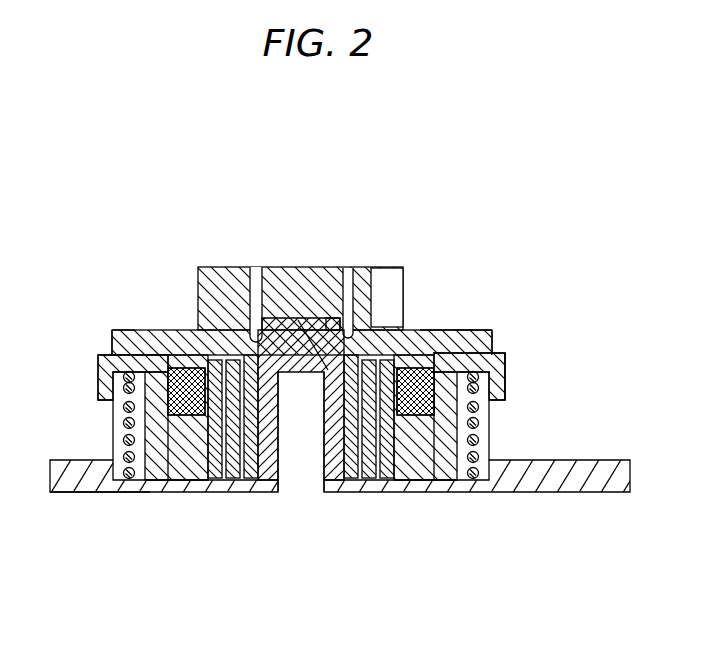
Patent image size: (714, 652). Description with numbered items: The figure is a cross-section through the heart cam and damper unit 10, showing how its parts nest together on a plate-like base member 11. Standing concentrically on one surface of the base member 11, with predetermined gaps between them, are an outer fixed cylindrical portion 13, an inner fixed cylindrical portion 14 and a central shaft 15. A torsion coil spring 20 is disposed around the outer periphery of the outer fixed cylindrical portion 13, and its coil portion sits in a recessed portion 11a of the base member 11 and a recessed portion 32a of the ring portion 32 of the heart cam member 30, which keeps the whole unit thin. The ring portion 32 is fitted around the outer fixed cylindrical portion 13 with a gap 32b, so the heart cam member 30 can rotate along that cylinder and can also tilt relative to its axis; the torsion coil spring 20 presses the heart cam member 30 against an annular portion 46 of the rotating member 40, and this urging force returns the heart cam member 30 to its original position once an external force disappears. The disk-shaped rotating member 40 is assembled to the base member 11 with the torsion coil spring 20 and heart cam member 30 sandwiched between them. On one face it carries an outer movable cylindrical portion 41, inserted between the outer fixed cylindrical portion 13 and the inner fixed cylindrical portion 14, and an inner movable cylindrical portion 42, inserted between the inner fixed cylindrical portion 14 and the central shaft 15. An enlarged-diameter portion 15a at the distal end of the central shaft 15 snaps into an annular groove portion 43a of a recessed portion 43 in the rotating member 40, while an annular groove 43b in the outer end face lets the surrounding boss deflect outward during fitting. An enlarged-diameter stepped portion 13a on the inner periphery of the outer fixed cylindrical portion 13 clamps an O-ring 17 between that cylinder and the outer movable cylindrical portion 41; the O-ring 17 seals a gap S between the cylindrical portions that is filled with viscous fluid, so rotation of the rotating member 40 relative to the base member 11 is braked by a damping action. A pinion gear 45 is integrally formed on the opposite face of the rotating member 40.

The heart cam and damper unit 10 is at (317, 368).
The base member 11 is at (607, 460).
The recessed portion 11a is at (100, 493).
The outer fixed cylindrical portion 13 is at (153, 358).
The enlarged-diameter stepped portion 13a is at (183, 493).
The inner fixed cylindrical portion 14 is at (220, 268).
The central shaft 15 is at (308, 267).
The enlarged-diameter portion 15a is at (332, 267).
The O-ring 17 is at (184, 418).
The torsion coil spring 20 is at (492, 428).
The heart cam member 30 is at (517, 367).
The ring portion 32 is at (98, 379).
The recessed portion 32a is at (116, 406).
The gap 32b is at (112, 340).
The rotating member 40 is at (176, 320).
The outer movable cylindrical portion 41 is at (211, 470).
The inner movable cylindrical portion 42 is at (235, 470).
The recessed portion 43 is at (293, 267).
The annular groove portion 43a is at (258, 267).
The annular groove 43b is at (348, 267).
The pinion gear 45 is at (383, 267).
The annular portion 46 is at (122, 332).
The gap S is at (225, 482).